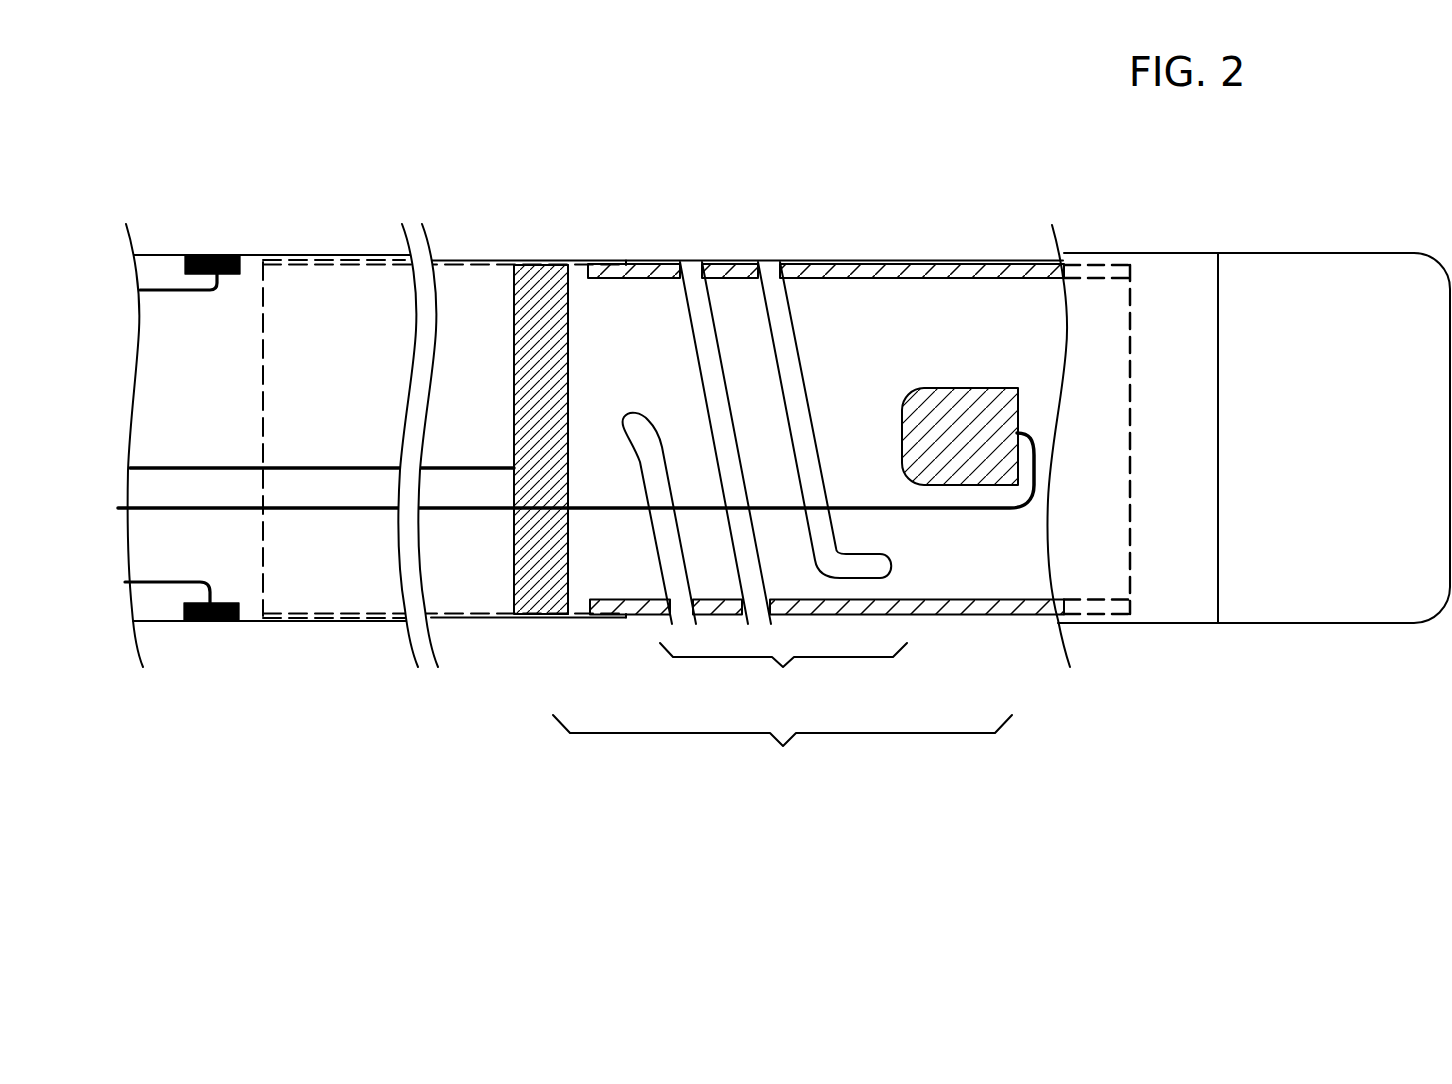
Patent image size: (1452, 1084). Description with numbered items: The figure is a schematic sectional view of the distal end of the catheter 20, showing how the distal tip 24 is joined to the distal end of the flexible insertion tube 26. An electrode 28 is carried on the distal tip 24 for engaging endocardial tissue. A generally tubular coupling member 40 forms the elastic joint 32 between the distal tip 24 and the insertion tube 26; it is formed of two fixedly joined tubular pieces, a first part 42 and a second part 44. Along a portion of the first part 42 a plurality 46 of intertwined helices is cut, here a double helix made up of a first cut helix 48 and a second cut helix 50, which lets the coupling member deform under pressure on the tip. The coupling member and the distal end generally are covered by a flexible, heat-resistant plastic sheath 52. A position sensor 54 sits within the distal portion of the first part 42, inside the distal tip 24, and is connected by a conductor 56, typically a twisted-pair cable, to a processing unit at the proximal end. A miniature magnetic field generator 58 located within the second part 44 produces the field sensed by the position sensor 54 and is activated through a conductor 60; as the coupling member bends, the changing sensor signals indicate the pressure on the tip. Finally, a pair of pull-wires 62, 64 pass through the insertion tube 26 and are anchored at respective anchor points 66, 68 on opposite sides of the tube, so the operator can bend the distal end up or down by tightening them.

The catheter 20 is at (343, 725).
The distal tip 24 is at (1187, 624).
The insertion tube 26 is at (302, 622).
The electrode 28 is at (1310, 624).
The elastic joint 32 is at (782, 748).
The coupling member 40 is at (810, 262).
The first part 42 is at (937, 266).
The second part 44 is at (488, 262).
The plurality of intertwined helices 46 is at (783, 673).
The first cut helix 48 is at (795, 352).
The second cut helix 50 is at (710, 392).
The flexible plastic sheath 52 is at (1142, 253).
The position sensor 54 is at (947, 388).
The conductor 56 is at (948, 512).
The magnetic field generator 58 is at (568, 352).
The conductor 60 is at (306, 466).
The pull-wire 62 is at (200, 296).
The pull-wire 64 is at (172, 588).
The anchor point 66 is at (207, 254).
The anchor point 68 is at (218, 622).